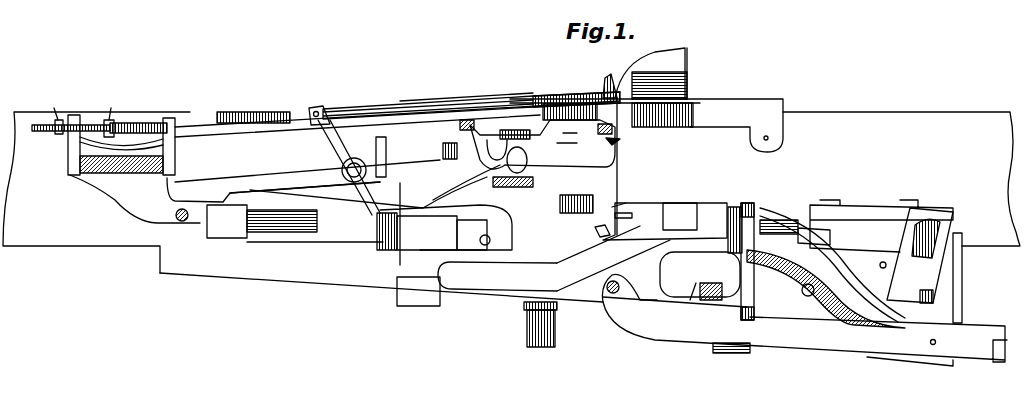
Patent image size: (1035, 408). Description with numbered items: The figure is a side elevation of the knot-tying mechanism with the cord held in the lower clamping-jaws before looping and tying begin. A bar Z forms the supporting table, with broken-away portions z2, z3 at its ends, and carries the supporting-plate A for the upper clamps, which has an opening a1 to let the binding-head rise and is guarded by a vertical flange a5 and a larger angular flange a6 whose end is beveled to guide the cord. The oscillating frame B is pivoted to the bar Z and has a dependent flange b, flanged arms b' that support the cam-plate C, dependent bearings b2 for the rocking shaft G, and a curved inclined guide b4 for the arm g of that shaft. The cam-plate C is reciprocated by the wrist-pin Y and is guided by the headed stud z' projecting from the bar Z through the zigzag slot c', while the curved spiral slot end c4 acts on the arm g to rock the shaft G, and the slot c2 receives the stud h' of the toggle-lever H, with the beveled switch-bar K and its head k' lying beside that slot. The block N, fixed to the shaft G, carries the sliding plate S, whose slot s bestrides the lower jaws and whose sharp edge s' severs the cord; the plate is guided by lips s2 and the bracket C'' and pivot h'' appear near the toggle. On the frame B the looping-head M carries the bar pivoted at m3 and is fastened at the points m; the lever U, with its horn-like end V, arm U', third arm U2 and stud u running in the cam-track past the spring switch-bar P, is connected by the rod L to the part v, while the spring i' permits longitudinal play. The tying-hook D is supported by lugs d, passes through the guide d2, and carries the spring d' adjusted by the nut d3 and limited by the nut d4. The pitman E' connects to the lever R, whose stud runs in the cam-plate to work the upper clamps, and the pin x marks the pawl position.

The bar Z is at (511, 192).
The table plate broken edge z2 is at (23, 233).
The table plate broken edge z3 is at (997, 236).
The supporting-plate A is at (646, 116).
The opening a1 is at (662, 99).
The vertical rib or flange a5 is at (608, 146).
The angular vertical rib or flange a6 is at (658, 66).
The looping-head M is at (464, 102).
The pitman E' is at (466, 90).
The lugs d is at (106, 135).
The nut d4 is at (53, 114).
The spring d' is at (113, 108).
The nut d3 is at (113, 116).
The spring i' is at (253, 109).
The tying-hook D is at (397, 141).
The lever R is at (346, 167).
The guide d2 is at (389, 149).
The pivot m3 is at (443, 144).
The arm U' is at (478, 120).
The attachment points m is at (515, 130).
The lever U is at (542, 153).
The rod L is at (564, 137).
The part v is at (612, 130).
The flattened inclined end V is at (620, 141).
The third arm U2 is at (365, 186).
The spring switch-bar P is at (272, 221).
The cam-plate C is at (381, 242).
The stud u is at (426, 231).
The flanged arms b' is at (573, 326).
The slot c' is at (497, 276).
The headed bolt or stud z' is at (613, 264).
The wrist-pin Y is at (532, 324).
The block N is at (594, 228).
The dependent lugs or bearings b2 is at (576, 205).
The pin x is at (619, 202).
The sliding plate S is at (665, 221).
The slot s is at (623, 212).
The sharp edge s' is at (644, 196).
The lips or flanges s2 is at (680, 216).
The pin or stud h' is at (732, 223).
The oscillating frame or plate B is at (881, 224).
The bracket C'' is at (754, 261).
The rocking shaft G is at (779, 228).
The toggle-lever H is at (814, 236).
The dependent flange b is at (832, 265).
The curved spiral end of slot c4 is at (826, 289).
The pivot h'' is at (807, 284).
The arm g is at (916, 255).
The curved slotted inclined guide b4 is at (962, 248).
The slot c2 is at (700, 274).
The beveled switch-bar K is at (715, 291).
The pin k' is at (692, 291).